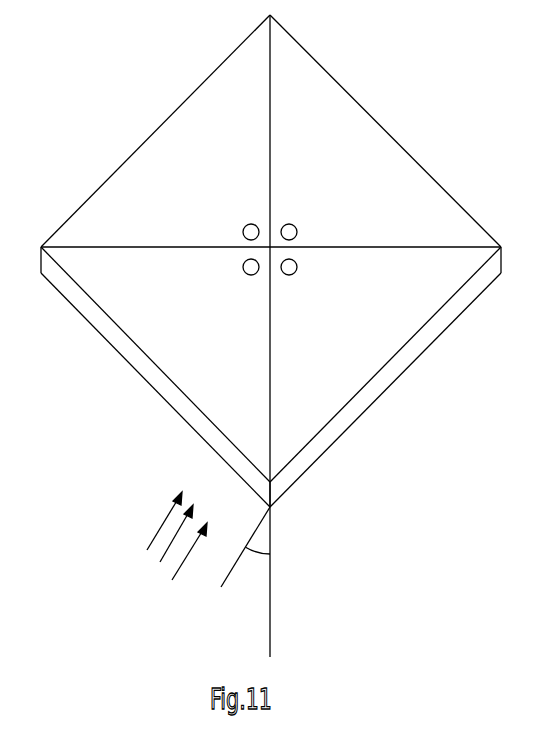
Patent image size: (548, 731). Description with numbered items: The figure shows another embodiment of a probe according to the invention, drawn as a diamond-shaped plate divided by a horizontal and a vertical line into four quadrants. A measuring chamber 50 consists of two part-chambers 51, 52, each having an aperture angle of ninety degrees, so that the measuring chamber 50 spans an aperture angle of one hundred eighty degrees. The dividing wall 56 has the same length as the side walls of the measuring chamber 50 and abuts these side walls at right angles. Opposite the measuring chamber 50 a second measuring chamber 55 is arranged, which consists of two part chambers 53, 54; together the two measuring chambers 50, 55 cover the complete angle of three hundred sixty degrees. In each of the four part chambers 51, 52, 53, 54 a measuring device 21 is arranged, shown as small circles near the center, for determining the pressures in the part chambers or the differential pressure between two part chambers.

The measuring devices 21 is at (292, 230).
The measuring chamber 50 is at (128, 300).
The part-chamber 51 is at (178, 368).
The part-chamber 52 is at (398, 330).
The part chamber 53 is at (397, 173).
The part chamber 54 is at (153, 153).
The second measuring chamber 55 is at (230, 100).
The dividing wall 56 is at (275, 492).